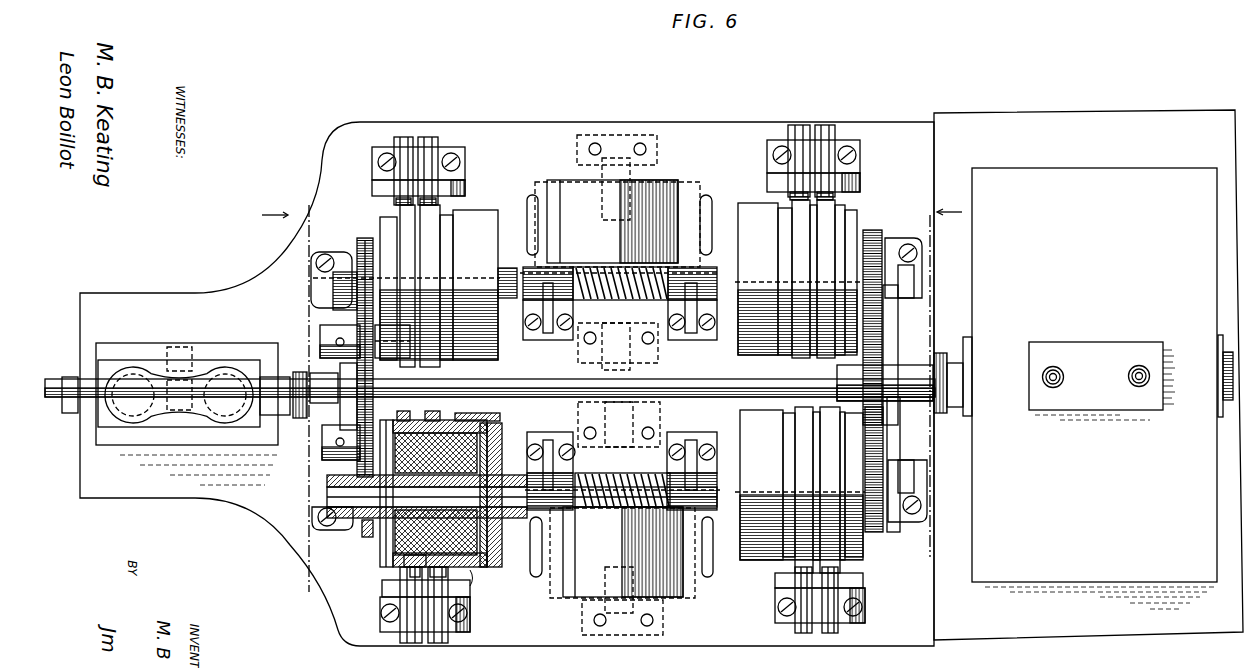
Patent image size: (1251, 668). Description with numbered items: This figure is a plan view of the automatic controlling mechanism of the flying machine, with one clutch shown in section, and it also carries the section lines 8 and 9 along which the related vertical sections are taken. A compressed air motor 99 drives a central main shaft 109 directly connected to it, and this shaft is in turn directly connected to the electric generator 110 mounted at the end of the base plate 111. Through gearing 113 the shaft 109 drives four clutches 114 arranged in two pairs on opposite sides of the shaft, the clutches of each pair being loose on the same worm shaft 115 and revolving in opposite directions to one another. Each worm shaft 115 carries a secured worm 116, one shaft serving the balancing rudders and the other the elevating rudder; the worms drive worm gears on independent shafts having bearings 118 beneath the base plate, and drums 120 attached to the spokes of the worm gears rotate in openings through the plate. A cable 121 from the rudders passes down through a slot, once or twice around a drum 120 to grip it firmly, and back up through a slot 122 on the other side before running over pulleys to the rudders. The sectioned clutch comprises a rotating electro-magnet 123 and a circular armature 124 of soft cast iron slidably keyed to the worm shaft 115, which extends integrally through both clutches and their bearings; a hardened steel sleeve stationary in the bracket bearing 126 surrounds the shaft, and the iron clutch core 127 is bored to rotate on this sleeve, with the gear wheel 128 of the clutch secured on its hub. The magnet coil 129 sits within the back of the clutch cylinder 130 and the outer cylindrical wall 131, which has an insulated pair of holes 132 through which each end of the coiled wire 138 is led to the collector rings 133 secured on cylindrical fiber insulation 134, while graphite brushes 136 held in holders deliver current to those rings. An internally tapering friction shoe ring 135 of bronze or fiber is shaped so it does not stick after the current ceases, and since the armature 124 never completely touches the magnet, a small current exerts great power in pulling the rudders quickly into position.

The section line 8— 8 is at (929, 209).
The section line 9— 9 is at (308, 208).
The compressed air motor 99 is at (187, 394).
The main shaft 109 is at (544, 372).
The electric generator 110 is at (1088, 375).
The base plate 111 is at (507, 384).
The gearing 113 is at (348, 362).
The clutch 114 is at (483, 576).
The worm shaft 115 is at (524, 302).
The worm 116 is at (655, 296).
The bearing 118 is at (660, 360).
The drum 120 is at (617, 385).
The cable 121 is at (634, 547).
The slot 122 is at (528, 212).
The rotating electro-magnet 123 is at (330, 482).
The circular armature 124 is at (498, 355).
The bracket bearing 126 is at (344, 530).
The clutch core 127 is at (500, 440).
The gear wheel 128 is at (340, 556).
The magnet coil 129 is at (392, 540).
The back of the clutch cylinder 130 is at (372, 560).
The outer cylindrical wall 131 is at (405, 566).
The insulated pair of holes 132 is at (368, 590).
The collector ring 133 is at (430, 228).
The cylindrical fiber insulation 134 is at (476, 408).
The friction shoe ring 135 is at (485, 566).
The graphite brush 136 is at (440, 204).
The coiled wire 138 is at (448, 572).